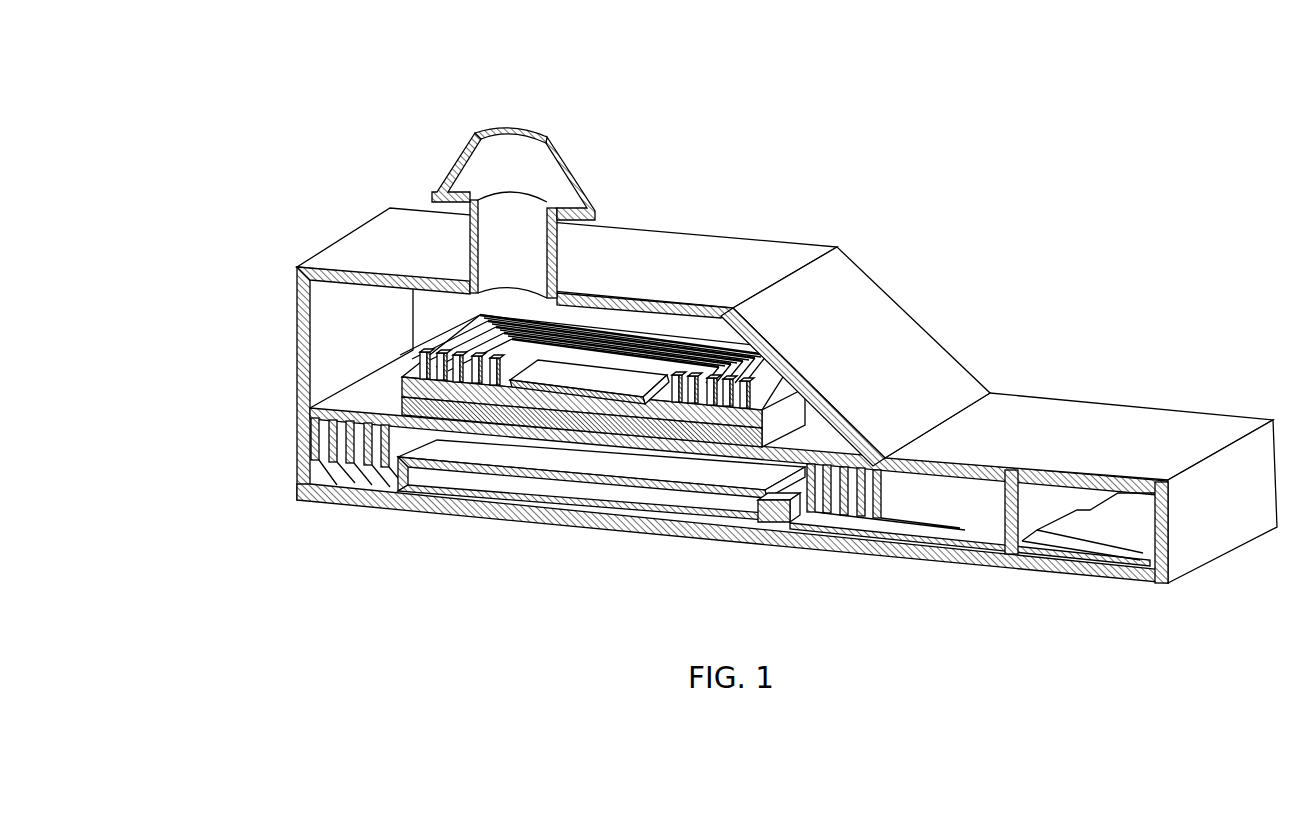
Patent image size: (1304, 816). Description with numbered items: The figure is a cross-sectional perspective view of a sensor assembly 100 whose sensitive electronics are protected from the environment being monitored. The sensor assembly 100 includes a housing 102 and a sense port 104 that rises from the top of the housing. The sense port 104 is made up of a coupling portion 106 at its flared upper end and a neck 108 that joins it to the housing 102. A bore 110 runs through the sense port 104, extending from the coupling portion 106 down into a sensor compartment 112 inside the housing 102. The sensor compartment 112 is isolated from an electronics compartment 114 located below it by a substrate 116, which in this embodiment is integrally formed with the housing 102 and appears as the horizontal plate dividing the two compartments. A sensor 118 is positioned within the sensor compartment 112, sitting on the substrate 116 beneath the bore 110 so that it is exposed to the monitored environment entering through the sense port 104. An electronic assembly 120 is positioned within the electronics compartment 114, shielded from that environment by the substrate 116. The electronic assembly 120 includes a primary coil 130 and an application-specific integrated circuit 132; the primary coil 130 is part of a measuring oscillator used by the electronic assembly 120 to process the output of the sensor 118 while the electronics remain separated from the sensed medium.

The sensor assembly 100 is at (717, 339).
The housing 102 is at (917, 325).
The sense port 104 is at (456, 168).
The coupling portion 106 is at (548, 132).
The neck 108 is at (558, 246).
The bore 110 is at (478, 222).
The sensor compartment 112 is at (310, 289).
The electronics compartment 114 is at (352, 485).
The substrate 116 is at (334, 408).
The sensor 118 is at (667, 330).
The electronic assembly 120 is at (595, 538).
The primary coil 130 is at (368, 458).
The application-specific integrated circuit (ASIC) 132 is at (772, 525).